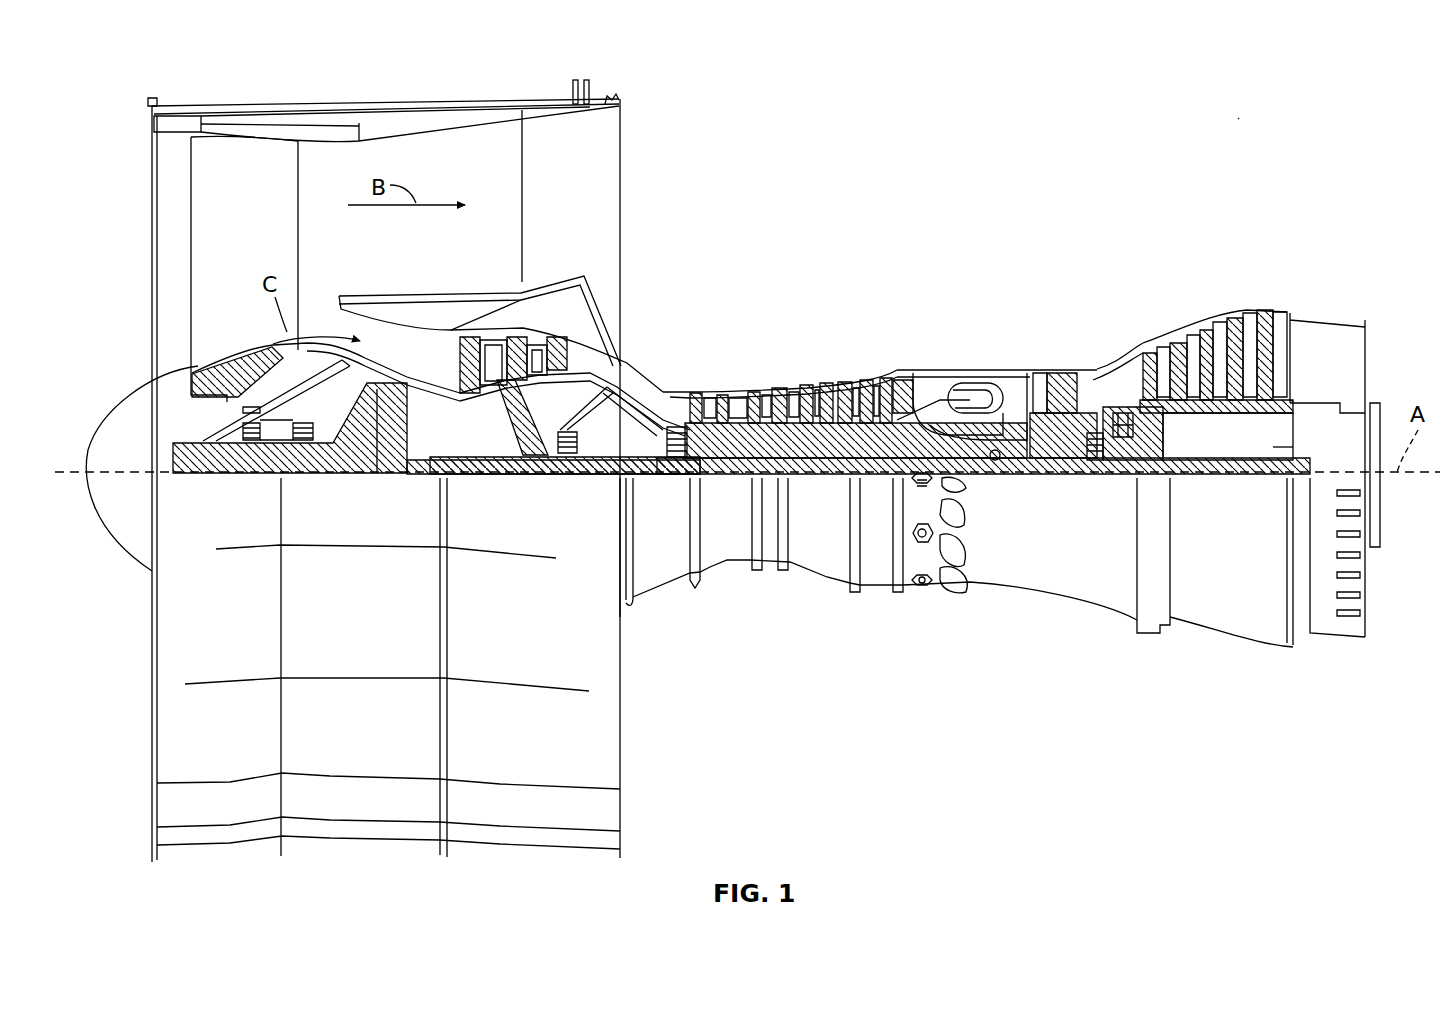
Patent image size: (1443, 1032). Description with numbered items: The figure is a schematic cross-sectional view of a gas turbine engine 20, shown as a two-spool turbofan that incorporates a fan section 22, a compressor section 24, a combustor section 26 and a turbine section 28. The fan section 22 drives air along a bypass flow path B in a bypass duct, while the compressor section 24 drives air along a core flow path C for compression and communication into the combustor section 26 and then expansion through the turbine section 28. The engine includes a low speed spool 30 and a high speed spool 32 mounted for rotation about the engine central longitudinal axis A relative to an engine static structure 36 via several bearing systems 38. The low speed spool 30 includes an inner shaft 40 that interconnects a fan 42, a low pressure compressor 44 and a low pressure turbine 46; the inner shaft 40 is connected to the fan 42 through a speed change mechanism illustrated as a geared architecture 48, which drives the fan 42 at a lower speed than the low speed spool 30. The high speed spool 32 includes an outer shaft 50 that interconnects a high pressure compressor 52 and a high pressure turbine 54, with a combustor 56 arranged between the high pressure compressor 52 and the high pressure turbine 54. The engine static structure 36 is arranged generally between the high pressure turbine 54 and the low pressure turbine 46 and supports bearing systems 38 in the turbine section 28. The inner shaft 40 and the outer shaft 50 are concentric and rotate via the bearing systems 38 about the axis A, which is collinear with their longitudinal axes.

The gas turbine engine 20 is at (1238, 118).
The fan section 22 is at (262, 104).
The compressor section 24 is at (796, 282).
The combustor section 26 is at (993, 258).
The turbine section 28 is at (1142, 250).
The low speed spool 30 is at (836, 480).
The high speed spool 32 is at (892, 420).
The engine static structure 36 is at (877, 592).
The bearing systems 38 is at (250, 445).
The inner shaft 40 is at (640, 478).
The fan 42 is at (252, 255).
The low pressure compressor 44 is at (537, 348).
The low pressure turbine 46 is at (1222, 332).
The geared architecture 48 is at (395, 460).
The outer shaft 50 is at (1000, 460).
The high pressure compressor 52 is at (790, 442).
The high pressure turbine 54 is at (1060, 368).
The combustor 56 is at (974, 397).